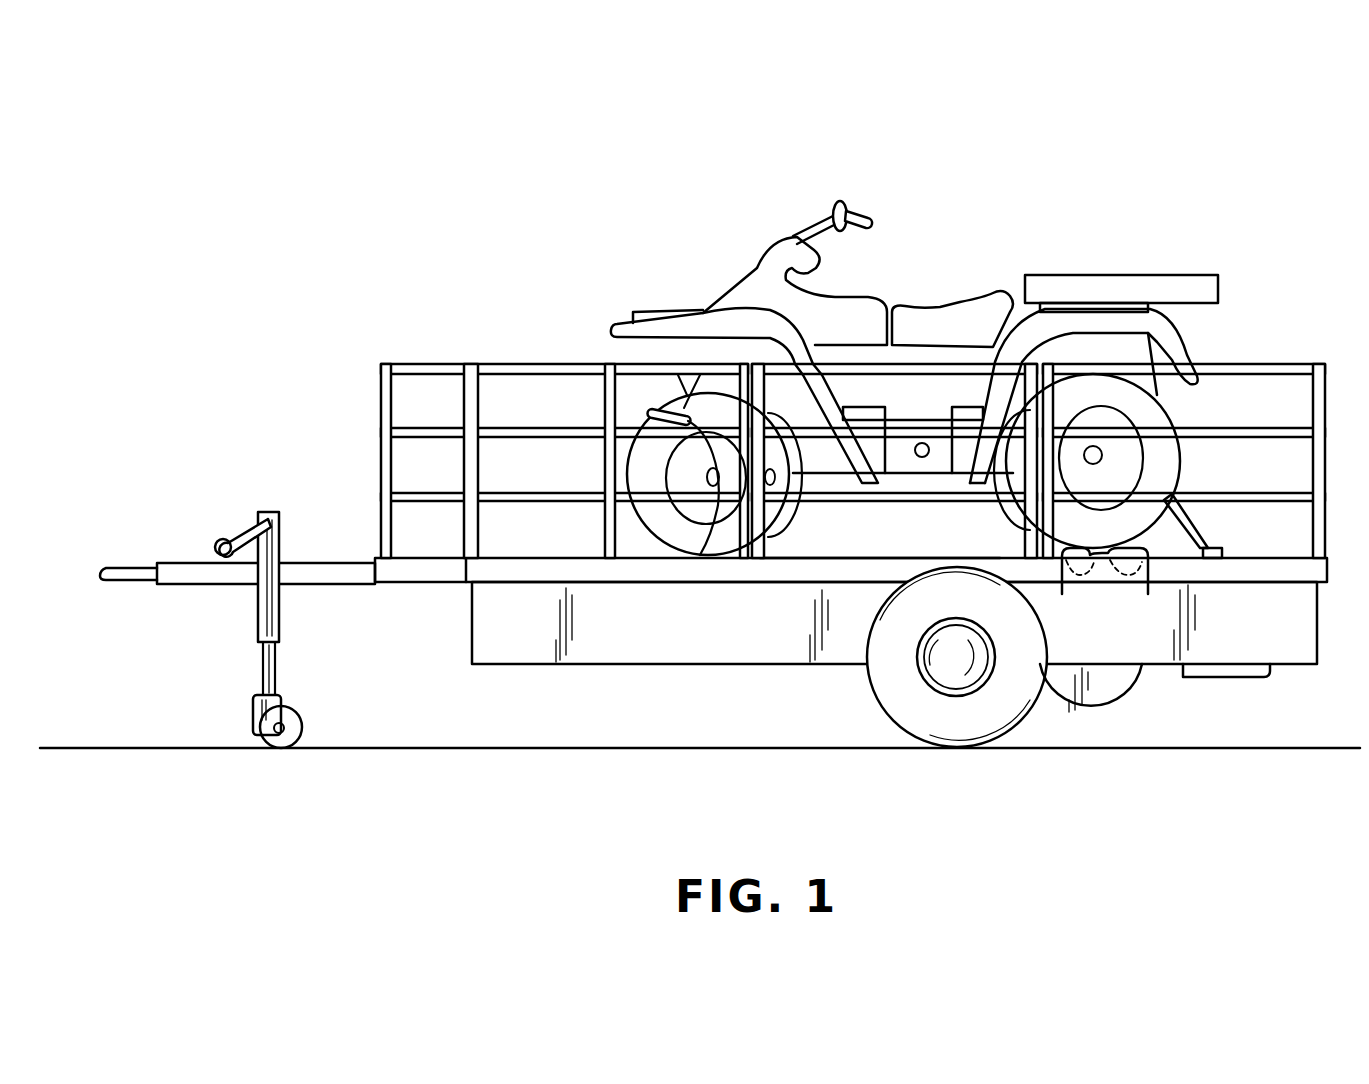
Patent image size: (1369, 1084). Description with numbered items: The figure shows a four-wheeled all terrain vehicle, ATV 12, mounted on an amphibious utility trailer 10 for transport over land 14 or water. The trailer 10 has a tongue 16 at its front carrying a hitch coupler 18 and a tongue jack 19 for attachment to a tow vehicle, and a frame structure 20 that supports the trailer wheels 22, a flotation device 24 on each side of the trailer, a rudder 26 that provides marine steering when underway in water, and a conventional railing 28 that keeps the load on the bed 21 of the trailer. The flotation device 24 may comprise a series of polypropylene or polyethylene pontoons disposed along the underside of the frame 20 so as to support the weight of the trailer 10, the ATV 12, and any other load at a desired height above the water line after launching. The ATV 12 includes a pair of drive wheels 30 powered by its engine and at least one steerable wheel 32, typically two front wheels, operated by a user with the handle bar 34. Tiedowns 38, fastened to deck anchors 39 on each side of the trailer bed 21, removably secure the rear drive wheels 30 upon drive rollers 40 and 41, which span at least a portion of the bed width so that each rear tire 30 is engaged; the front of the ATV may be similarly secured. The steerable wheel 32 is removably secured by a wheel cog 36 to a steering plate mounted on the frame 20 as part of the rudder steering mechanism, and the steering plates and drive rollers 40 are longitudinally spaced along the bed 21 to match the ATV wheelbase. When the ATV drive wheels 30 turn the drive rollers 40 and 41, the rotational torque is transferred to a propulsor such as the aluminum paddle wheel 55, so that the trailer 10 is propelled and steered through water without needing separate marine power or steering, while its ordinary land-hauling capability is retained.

The amphibious utility trailer 10 is at (340, 347).
The ATV 12 is at (1057, 218).
The land 14 is at (121, 748).
The tongue 16 is at (218, 586).
The hitch coupler 18 is at (126, 568).
The tongue jack 19 is at (264, 514).
The frame structure 20 is at (320, 556).
The bed 21 is at (866, 558).
The trailer wheels 22 is at (880, 696).
The flotation device 24 is at (471, 629).
The rudder 26 is at (1250, 677).
The railing 28 is at (1258, 363).
The drive wheels 30 is at (1183, 457).
The steerable wheel 32 is at (688, 545).
The handle bar 34 is at (815, 232).
The wheel cog 36 is at (648, 413).
The tiedowns 38 is at (1195, 523).
The deck anchors 39 is at (1225, 552).
The drive rollers 40 is at (1115, 586).
The drive rollers 41 is at (1073, 592).
The paddle wheel 55 is at (1120, 690).